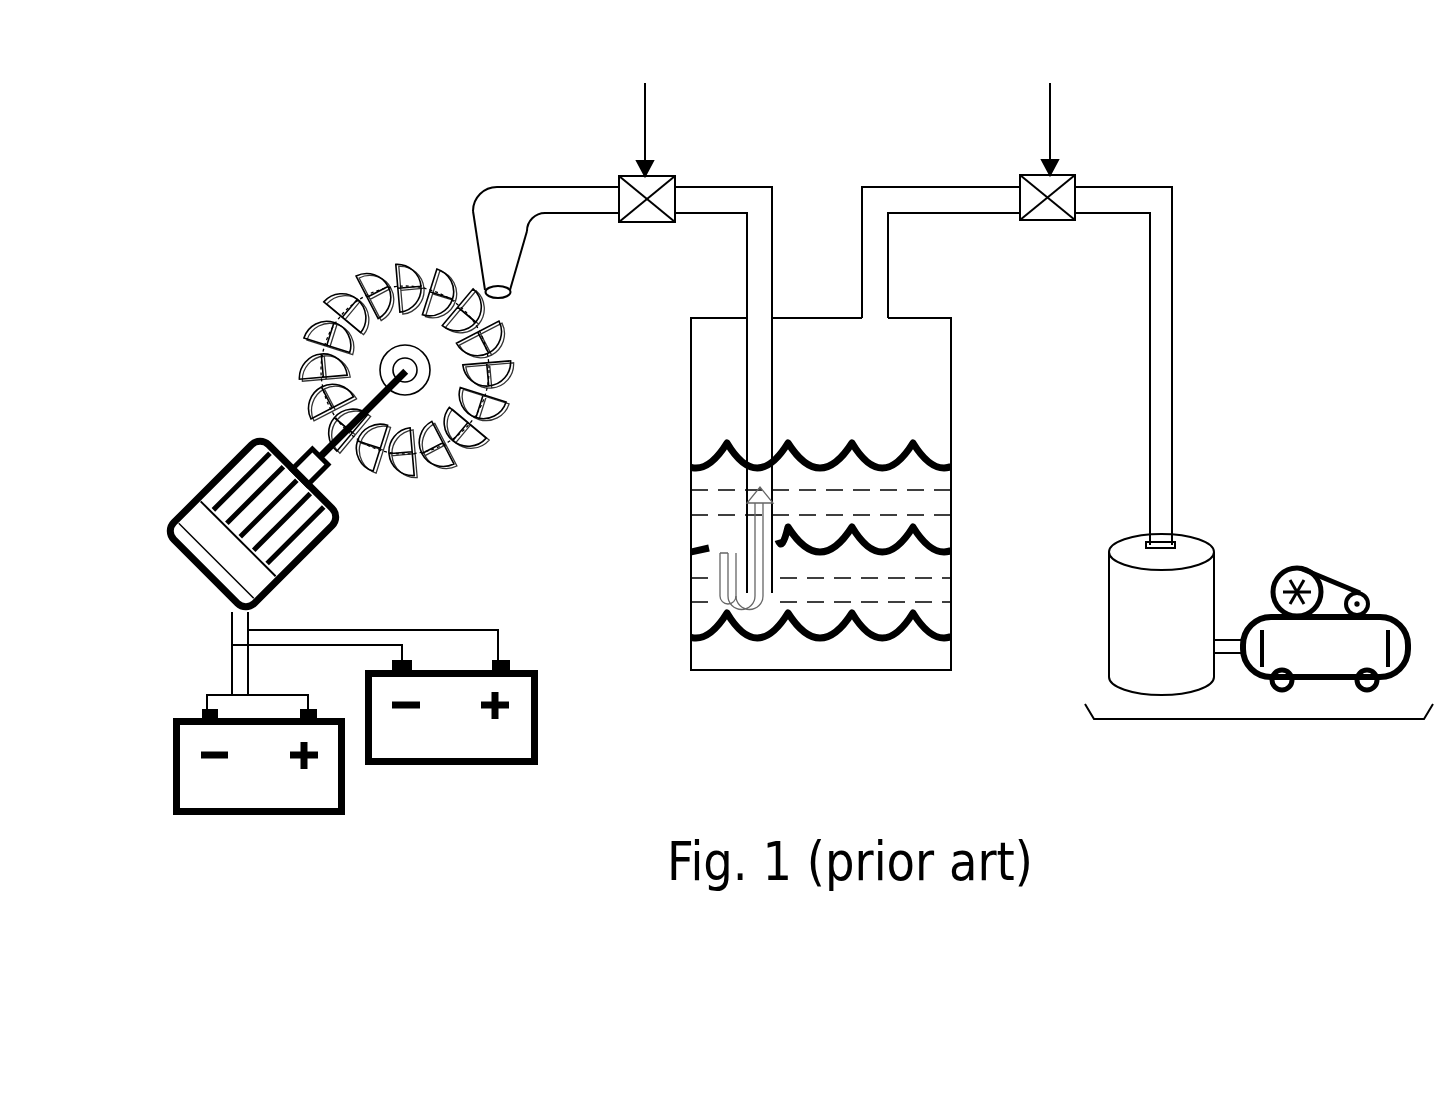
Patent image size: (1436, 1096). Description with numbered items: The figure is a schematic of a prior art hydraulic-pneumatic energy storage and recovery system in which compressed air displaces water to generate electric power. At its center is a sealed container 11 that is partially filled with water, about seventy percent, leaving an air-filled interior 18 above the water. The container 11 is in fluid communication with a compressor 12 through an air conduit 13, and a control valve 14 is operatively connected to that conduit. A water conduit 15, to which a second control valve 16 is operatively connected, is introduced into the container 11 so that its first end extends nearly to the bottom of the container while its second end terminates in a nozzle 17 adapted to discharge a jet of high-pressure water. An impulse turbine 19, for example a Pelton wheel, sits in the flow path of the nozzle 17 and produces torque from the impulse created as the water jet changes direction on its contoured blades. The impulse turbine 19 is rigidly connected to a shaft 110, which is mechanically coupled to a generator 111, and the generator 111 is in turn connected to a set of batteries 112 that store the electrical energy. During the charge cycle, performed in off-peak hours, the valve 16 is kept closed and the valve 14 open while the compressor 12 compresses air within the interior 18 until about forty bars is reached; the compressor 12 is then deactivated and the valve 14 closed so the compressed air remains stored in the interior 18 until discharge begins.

The sealed container 11 is at (691, 622).
The compressor 12 is at (1250, 720).
The air conduit 13 is at (1097, 195).
The control valve 14 is at (1050, 222).
The water conduit 15 is at (592, 195).
The control valve 16 is at (645, 225).
The nozzle 17 is at (508, 247).
The interior 18 is at (718, 378).
The impulse turbine 19 is at (380, 288).
The shaft 110 is at (373, 395).
The generator 111 is at (198, 493).
The batteries 112 is at (323, 800).